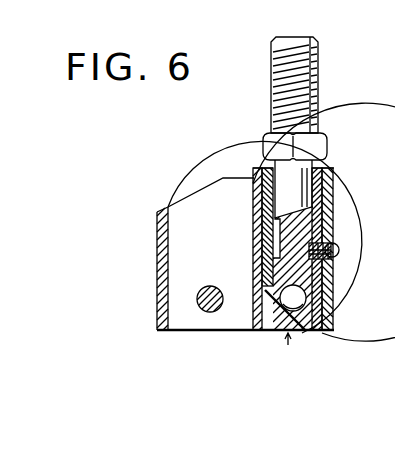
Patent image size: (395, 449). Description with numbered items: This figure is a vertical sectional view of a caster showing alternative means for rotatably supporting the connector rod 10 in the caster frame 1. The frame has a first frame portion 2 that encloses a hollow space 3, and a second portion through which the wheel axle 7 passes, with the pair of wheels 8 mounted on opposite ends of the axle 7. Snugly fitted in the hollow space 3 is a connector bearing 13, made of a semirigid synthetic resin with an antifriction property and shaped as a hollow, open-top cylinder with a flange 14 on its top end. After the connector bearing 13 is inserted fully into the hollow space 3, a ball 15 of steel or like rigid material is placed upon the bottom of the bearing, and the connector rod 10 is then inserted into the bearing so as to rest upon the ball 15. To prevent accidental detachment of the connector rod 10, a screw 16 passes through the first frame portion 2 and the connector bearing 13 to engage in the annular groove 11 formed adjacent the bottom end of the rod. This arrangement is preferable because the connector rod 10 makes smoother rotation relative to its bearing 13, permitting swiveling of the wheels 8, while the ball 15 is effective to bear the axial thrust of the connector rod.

The caster frame 1 is at (222, 168).
The first frame portion 2 is at (335, 323).
The hollow space 3 is at (334, 212).
The wheel axle 7 is at (208, 313).
The wheels 8 is at (118, 232).
The connector rod 10 is at (283, 180).
The annular groove 11 is at (323, 278).
The connector bearing 13 is at (291, 340).
The flange 14 is at (333, 168).
The ball 15 is at (300, 310).
The screw 16 is at (339, 250).